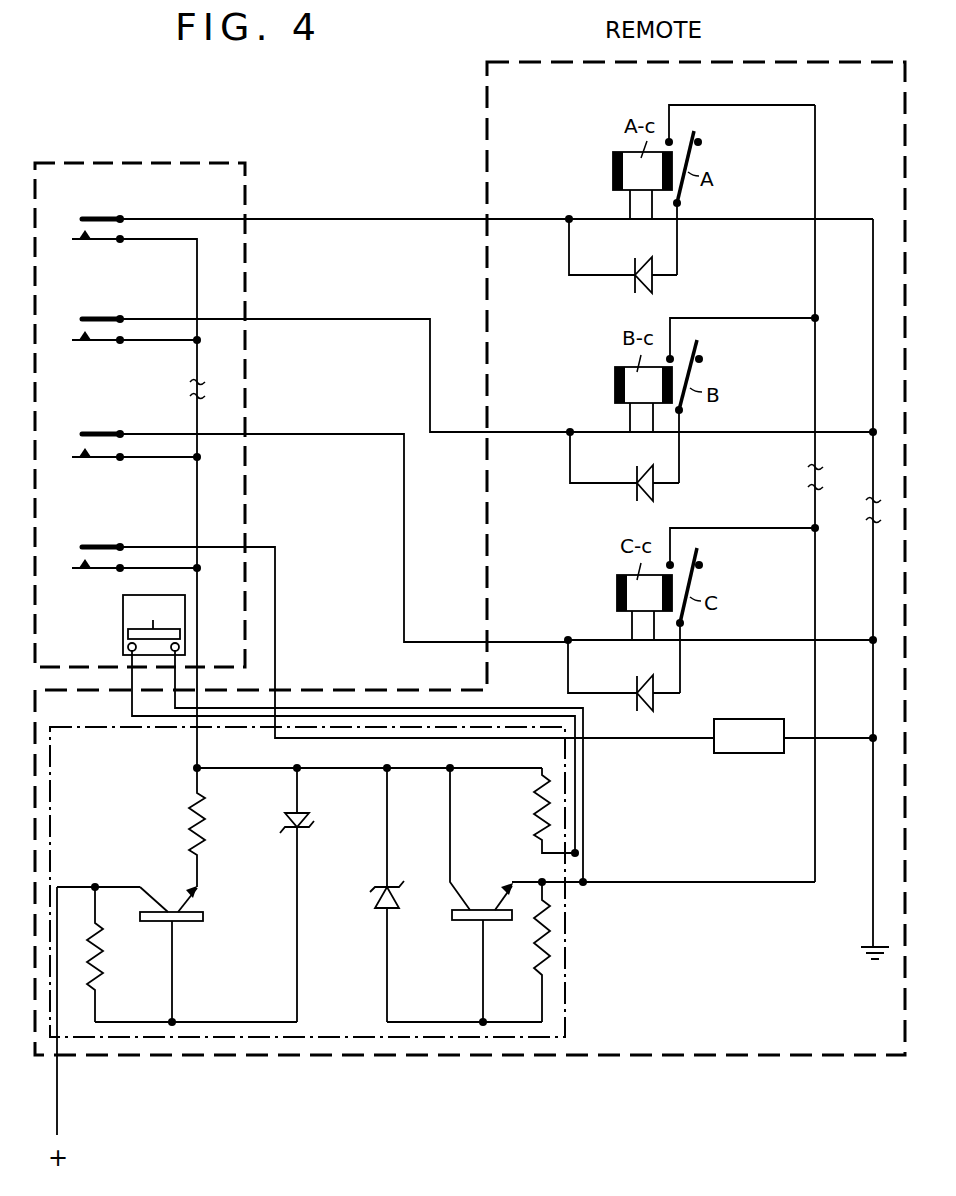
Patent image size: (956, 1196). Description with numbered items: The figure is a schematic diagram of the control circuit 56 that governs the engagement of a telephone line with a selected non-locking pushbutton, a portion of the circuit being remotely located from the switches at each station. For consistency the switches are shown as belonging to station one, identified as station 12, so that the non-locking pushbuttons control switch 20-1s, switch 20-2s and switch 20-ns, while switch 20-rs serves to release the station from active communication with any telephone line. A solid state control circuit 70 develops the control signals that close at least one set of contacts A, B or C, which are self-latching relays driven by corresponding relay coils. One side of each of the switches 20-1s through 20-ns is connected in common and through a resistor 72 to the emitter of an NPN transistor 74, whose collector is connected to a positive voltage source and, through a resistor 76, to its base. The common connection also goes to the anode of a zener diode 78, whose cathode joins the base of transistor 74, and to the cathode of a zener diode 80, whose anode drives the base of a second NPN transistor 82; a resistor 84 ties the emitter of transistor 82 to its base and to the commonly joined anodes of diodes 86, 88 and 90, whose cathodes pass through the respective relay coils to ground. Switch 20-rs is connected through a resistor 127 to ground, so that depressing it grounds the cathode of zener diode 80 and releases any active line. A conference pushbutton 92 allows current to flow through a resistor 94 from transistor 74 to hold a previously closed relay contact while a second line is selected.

The station 12 is at (148, 158).
The control circuit 56 is at (680, 1057).
The solid state control circuit 70 is at (565, 1000).
The switch 20-1s is at (98, 252).
The switch 20-2s is at (98, 352).
The switch 20-ns is at (98, 472).
The release switch 20-rs is at (103, 586).
The conference pushbutton 92 is at (186, 642).
The resistor 72 is at (191, 826).
The NPN-type transistor 74 is at (182, 921).
The resistor 76 is at (101, 952).
The zener diode 78 is at (297, 831).
The zener diode 80 is at (387, 882).
The NPN-type transistor 82 is at (470, 915).
The resistor 84 is at (548, 962).
The resistor 94 is at (542, 816).
The diode 90 is at (641, 278).
The diode 88 is at (643, 494).
The diode 86 is at (645, 693).
The resistor 127 is at (755, 730).